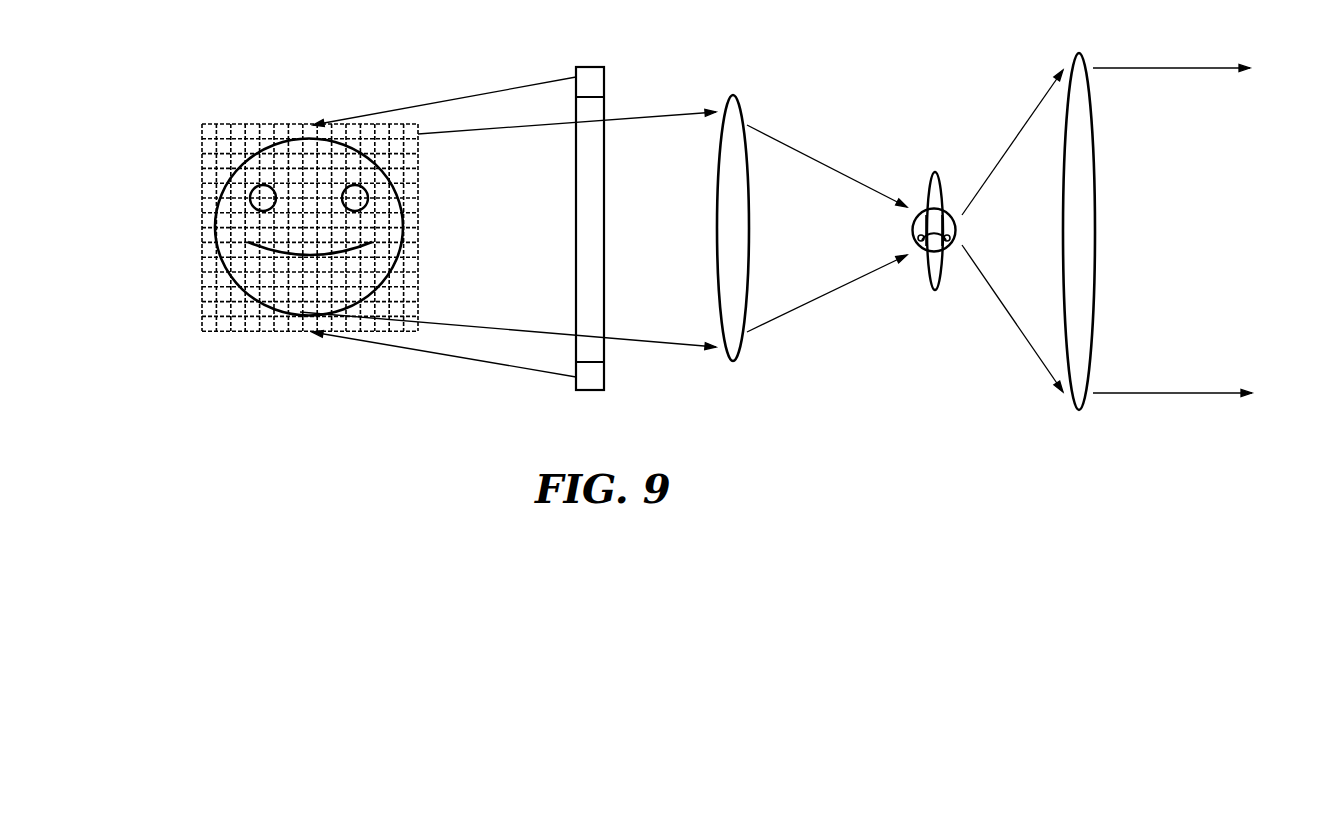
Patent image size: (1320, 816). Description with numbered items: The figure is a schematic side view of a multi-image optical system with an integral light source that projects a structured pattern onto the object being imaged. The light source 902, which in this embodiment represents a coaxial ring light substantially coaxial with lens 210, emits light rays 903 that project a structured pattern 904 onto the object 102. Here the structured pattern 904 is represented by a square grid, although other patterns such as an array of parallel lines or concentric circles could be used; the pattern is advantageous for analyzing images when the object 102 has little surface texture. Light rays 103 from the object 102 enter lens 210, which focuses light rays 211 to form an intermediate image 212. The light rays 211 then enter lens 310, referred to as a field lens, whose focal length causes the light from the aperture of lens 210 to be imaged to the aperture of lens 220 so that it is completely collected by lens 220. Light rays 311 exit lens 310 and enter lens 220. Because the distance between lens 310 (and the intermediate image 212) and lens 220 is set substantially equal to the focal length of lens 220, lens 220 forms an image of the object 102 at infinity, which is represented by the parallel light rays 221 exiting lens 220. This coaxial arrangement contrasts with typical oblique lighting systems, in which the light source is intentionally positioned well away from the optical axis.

The object 102 is at (277, 318).
The structured pattern 904 is at (237, 310).
The light rays 903 is at (413, 105).
The light source 902 is at (590, 392).
The light rays 103 is at (645, 122).
The lens 210 is at (733, 363).
The light rays 211 is at (835, 168).
The intermediate image 212 is at (957, 230).
The lens 310 is at (935, 292).
The light rays 311 is at (1005, 152).
The lens 220 is at (1078, 412).
The light rays 221 is at (1167, 67).